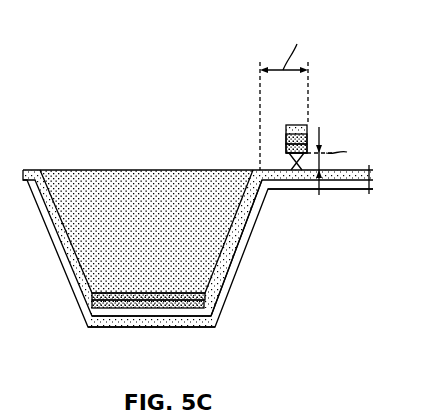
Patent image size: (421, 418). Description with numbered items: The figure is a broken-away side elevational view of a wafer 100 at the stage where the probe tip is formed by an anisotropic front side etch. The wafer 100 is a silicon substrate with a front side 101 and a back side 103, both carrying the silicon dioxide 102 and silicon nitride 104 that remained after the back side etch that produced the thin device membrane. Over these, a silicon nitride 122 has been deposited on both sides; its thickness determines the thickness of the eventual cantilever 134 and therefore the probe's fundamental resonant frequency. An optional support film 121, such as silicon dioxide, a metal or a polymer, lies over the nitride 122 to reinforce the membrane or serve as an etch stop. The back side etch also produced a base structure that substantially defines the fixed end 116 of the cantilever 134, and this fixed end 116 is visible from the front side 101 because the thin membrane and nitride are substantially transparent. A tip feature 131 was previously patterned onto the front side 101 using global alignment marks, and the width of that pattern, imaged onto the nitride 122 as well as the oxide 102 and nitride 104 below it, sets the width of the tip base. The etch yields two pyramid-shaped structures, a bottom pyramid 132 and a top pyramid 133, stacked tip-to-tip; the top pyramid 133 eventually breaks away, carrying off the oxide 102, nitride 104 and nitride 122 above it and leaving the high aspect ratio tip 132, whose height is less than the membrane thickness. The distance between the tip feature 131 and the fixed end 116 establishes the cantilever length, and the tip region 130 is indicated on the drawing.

The wafer 100 is at (68, 170).
The front side 101 is at (118, 170).
The silicon dioxide layer 102 is at (286, 140).
The back side 103 is at (139, 305).
The silicon nitride layer 104 is at (307, 140).
The fixed end of the cantilever 116 is at (250, 170).
The support film 121 is at (240, 250).
The silicon nitride layer 122 is at (292, 125).
The closure region 130 is at (311, 102).
The tip feature 131 is at (281, 156).
The bottom pyramid 132 is at (296, 172).
The top pyramid 133 is at (287, 151).
The cantilever 134 is at (291, 196).